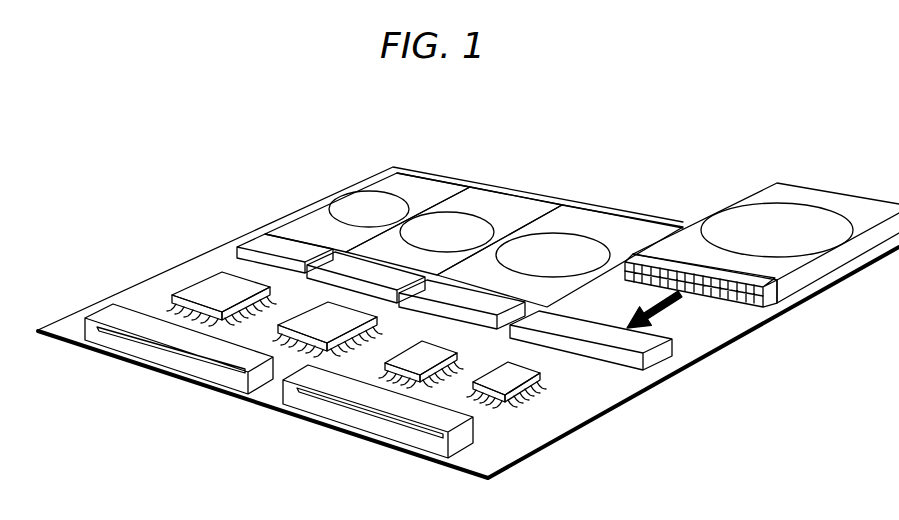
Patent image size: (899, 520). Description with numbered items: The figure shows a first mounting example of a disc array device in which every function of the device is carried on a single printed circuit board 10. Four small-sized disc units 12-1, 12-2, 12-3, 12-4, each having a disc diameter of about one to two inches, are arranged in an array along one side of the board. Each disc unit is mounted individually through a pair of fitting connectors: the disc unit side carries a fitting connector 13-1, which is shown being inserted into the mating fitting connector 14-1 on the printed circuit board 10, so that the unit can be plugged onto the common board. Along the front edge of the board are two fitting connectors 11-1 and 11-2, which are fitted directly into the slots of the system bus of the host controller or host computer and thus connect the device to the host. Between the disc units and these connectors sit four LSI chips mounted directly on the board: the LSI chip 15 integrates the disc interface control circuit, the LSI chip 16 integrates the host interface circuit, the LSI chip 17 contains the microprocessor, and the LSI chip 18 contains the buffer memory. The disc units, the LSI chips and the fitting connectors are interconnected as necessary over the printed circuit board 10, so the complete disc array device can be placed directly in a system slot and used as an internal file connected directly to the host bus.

The printed circuit board 10 is at (190, 258).
The fitting connector 11-1 is at (362, 420).
The fitting connector 11-2 is at (168, 358).
The small-sized disc unit 12-1 is at (793, 218).
The small-sized disc unit 12-2 is at (595, 220).
The small-sized disc unit 12-3 is at (497, 205).
The small-sized disc unit 12-4 is at (413, 185).
The fitting connector 13-1 is at (773, 302).
The fitting connector 14-1 is at (657, 357).
The LSI chip 15 is at (530, 358).
The LSI chip 16 is at (452, 337).
The LSI chip 17 is at (366, 306).
The LSI chip 18 is at (262, 275).